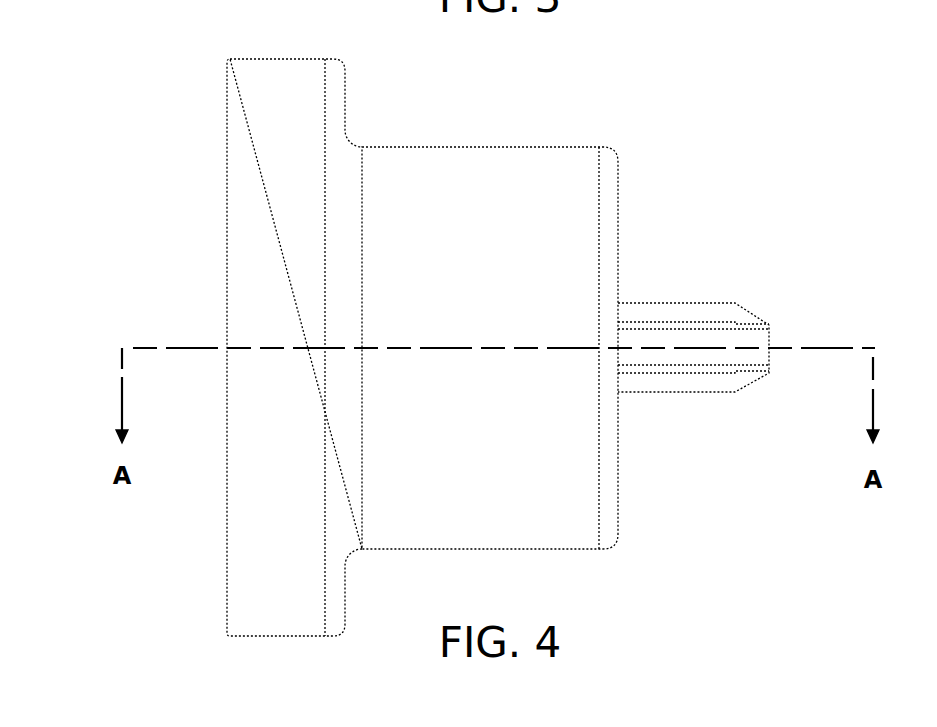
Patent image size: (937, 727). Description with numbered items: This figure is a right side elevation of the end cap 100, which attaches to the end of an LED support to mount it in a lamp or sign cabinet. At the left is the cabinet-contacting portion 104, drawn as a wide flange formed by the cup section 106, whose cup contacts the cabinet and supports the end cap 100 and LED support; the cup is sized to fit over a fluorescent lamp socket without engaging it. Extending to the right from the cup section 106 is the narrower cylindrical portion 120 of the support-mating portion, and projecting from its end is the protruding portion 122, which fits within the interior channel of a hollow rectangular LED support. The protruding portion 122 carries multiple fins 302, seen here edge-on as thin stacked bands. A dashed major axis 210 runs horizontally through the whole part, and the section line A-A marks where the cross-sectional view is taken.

The end cap 100 is at (786, 125).
The cabinet-contacting portion 104 is at (143, 523).
The cup section 106 is at (272, 57).
The cylindrical portion 120 is at (580, 549).
The protruding portion 122 is at (772, 332).
The major axis 210 is at (160, 347).
The fins 302 is at (668, 297).